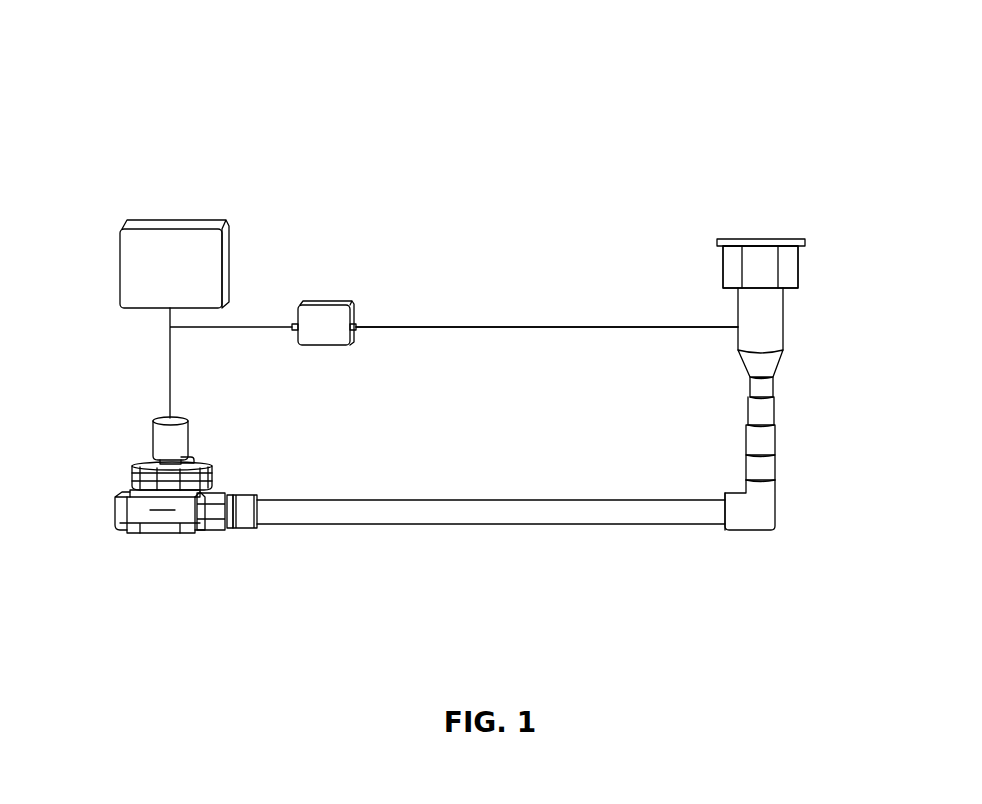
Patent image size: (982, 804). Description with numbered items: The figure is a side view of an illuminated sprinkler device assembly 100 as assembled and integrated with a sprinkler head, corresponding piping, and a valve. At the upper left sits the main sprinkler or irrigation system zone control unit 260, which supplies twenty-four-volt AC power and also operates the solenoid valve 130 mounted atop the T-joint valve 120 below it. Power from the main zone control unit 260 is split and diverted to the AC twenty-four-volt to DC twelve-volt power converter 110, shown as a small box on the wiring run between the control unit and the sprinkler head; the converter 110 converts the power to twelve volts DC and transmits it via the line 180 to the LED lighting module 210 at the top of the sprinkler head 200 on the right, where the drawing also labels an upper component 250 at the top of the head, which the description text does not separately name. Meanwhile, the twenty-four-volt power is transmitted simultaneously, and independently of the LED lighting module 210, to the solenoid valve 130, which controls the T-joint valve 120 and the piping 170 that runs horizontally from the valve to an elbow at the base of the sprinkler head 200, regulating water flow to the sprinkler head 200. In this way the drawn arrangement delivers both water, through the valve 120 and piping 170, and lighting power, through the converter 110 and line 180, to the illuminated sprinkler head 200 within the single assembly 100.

The illuminated sprinkler device assembly 100 is at (530, 136).
The power converter 110 is at (343, 306).
The T-joint valve 120 is at (152, 478).
The solenoid valve 130 is at (160, 427).
The piping 170 is at (473, 513).
The line 180 is at (508, 328).
The sprinkler head 200 is at (768, 443).
The LED lighting module 210 is at (816, 272).
The sprinkler nozzle 250 is at (756, 243).
The main zone control unit 260 is at (150, 232).